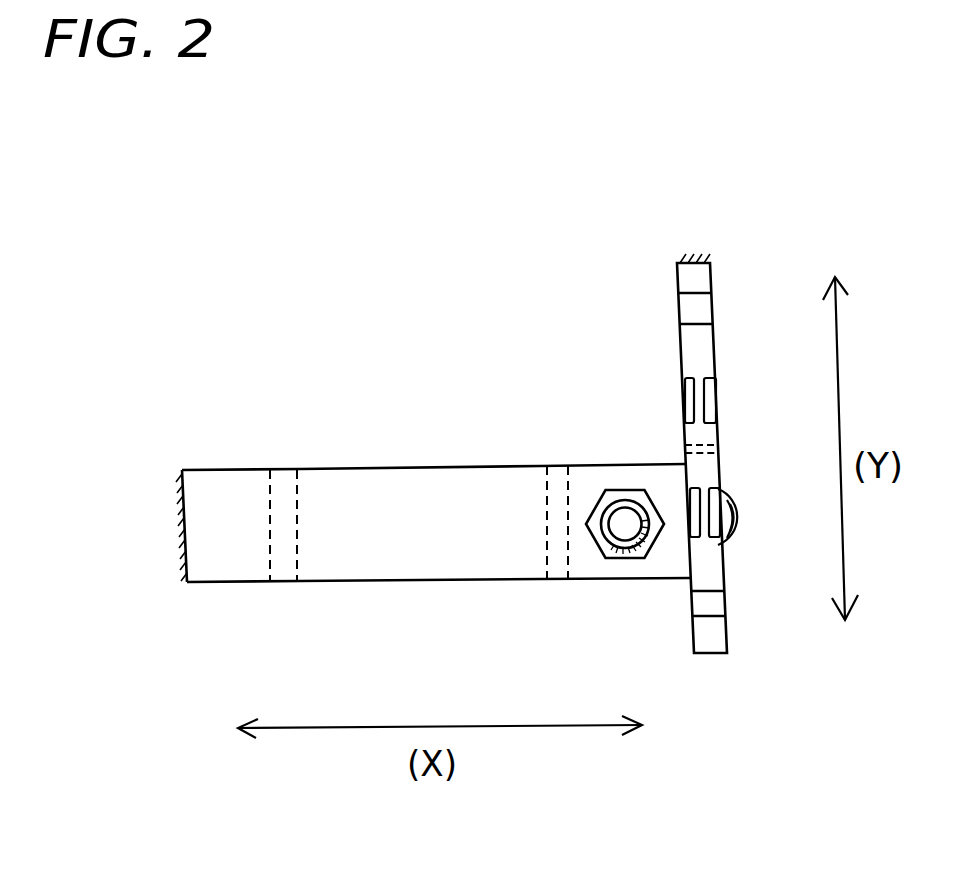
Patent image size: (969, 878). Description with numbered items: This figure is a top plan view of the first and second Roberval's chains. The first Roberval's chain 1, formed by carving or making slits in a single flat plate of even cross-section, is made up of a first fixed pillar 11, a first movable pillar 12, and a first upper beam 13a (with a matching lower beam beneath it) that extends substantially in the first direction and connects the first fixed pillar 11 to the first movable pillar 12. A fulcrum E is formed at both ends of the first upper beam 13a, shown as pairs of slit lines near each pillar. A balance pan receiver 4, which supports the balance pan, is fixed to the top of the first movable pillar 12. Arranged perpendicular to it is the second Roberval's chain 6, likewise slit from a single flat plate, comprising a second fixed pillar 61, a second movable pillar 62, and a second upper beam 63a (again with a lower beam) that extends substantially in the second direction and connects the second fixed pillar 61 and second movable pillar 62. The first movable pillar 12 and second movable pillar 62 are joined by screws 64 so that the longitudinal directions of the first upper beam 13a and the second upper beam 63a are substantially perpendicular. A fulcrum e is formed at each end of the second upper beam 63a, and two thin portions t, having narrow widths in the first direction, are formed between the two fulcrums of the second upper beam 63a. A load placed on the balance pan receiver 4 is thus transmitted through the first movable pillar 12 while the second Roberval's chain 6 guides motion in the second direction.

The first Roberval's chain 1 is at (392, 635).
The first fixed pillar 11 is at (226, 584).
The first movable pillar 12 is at (657, 570).
The first upper beam 13a is at (430, 487).
The balance pan receiver 4 is at (620, 530).
The second Roberval's chain 6 is at (647, 315).
The second fixed pillar 61 is at (705, 270).
The second movable pillar 62 is at (715, 565).
The second upper beam 63a is at (695, 357).
The screws 64 is at (723, 493).
The fulcrum E is at (285, 475).
The fulcrum e is at (703, 310).
The thin portions t is at (702, 400).